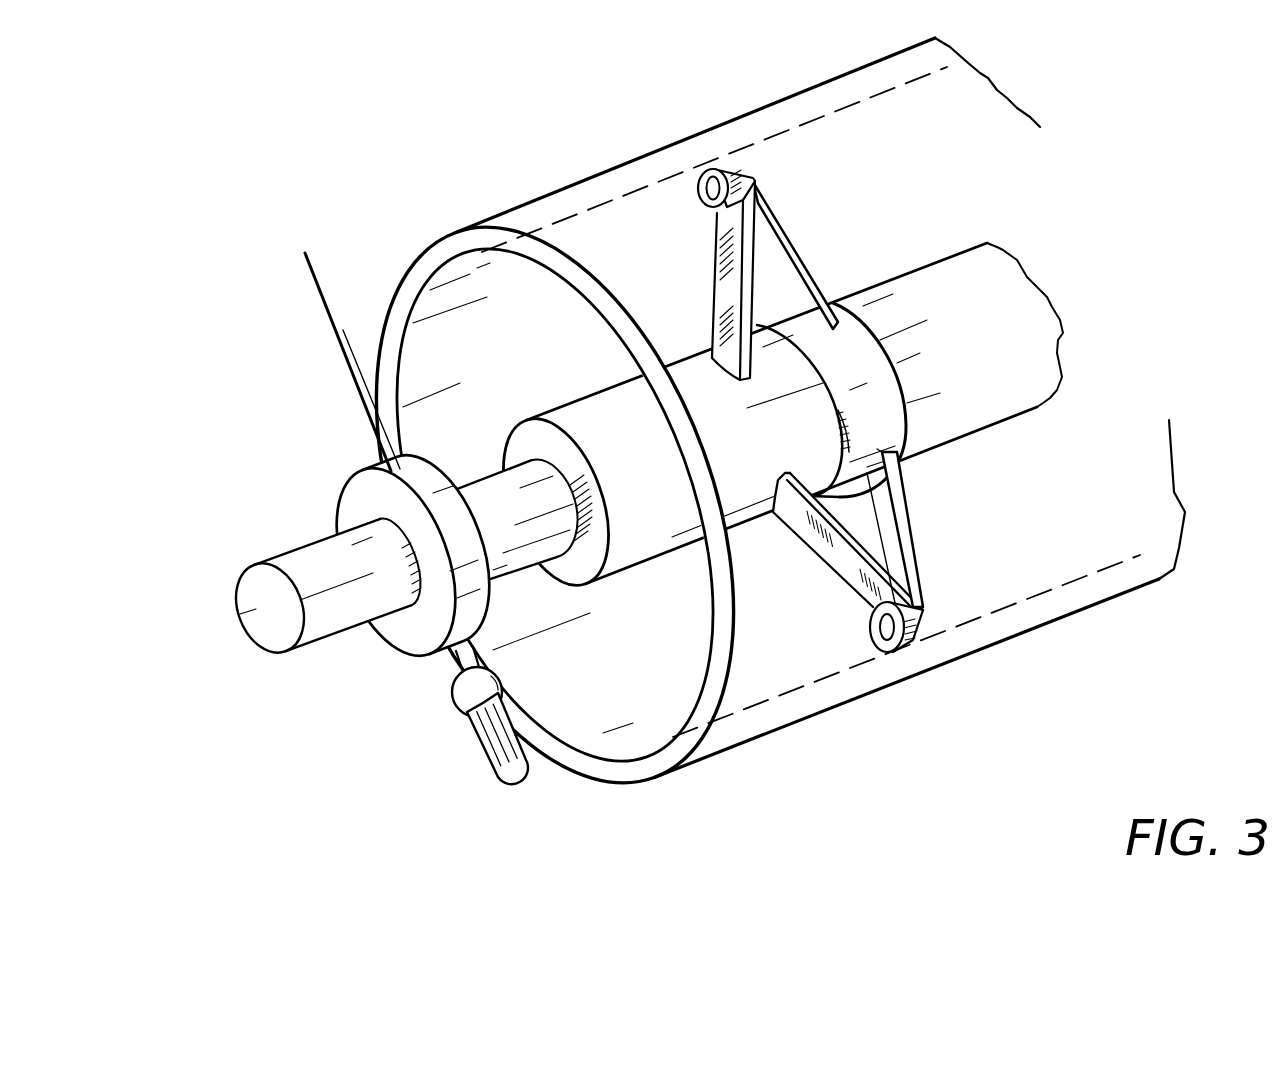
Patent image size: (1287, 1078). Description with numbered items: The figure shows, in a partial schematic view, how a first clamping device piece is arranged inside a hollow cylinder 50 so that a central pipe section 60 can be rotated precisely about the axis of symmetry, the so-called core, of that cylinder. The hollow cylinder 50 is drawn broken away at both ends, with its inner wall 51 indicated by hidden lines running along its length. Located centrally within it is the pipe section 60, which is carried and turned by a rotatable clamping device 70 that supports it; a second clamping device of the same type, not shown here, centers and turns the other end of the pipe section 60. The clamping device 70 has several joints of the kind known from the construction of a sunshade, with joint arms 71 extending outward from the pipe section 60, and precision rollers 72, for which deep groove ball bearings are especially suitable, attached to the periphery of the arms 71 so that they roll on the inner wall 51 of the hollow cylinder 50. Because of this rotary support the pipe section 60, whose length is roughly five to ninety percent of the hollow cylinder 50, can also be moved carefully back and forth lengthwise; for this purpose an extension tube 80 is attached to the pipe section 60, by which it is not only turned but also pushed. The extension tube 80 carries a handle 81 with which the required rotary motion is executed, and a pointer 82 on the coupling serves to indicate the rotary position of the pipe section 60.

The outer tube 50 is at (612, 166).
The hidden inner wall lines of outer tube 51 is at (1012, 604).
The inner rod 60 is at (963, 251).
The clamp band 70 is at (888, 432).
The clamp arm 71 is at (866, 606).
The pivot boss 72 is at (908, 643).
The shaft with collar 80 is at (318, 645).
The knob handle 81 is at (520, 787).
The locking pin 82 is at (305, 253).